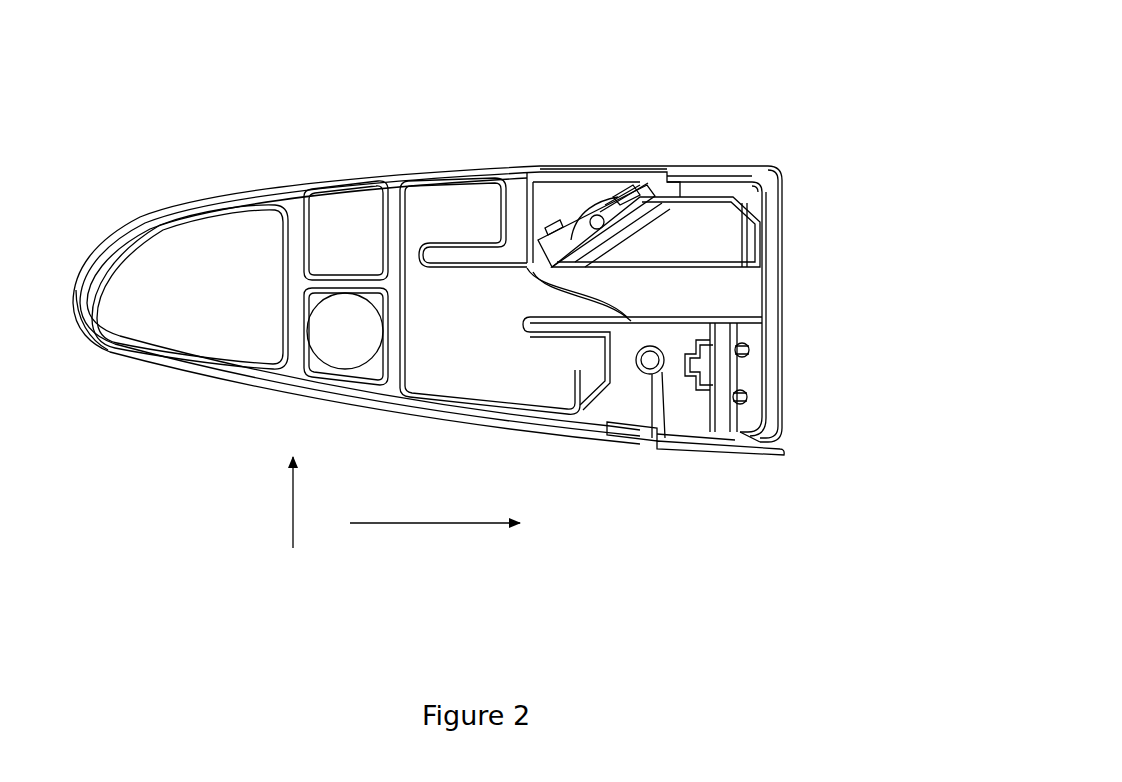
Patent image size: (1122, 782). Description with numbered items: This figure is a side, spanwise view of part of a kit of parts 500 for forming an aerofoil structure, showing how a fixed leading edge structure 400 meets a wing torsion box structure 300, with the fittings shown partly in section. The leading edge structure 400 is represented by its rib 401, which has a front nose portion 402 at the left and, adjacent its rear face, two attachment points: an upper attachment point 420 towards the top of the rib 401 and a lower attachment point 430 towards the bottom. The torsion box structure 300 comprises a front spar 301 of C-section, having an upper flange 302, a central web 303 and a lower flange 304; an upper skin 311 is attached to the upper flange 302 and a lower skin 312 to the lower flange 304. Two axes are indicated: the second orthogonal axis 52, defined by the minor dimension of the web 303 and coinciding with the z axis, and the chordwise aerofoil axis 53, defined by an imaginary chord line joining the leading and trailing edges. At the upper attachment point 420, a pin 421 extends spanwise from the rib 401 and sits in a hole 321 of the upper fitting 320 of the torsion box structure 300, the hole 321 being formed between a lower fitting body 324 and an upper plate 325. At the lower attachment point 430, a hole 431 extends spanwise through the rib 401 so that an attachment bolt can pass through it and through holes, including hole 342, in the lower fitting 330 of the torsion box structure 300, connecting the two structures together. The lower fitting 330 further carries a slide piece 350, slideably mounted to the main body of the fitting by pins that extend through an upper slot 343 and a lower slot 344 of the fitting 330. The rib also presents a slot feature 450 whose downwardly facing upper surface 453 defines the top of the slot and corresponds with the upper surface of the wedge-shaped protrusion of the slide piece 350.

The leading edge structure 400 is at (230, 180).
The rib 401 is at (212, 340).
The front nose portion 402 is at (87, 350).
The upper attachment point 420 is at (560, 147).
The kit of parts 500 is at (762, 108).
The torsion box structure 300 is at (790, 422).
The upper skin 311 is at (720, 170).
The upper flange 302 is at (683, 188).
The front spar 301 is at (857, 148).
The central web 303 is at (836, 151).
The upper fitting 320 is at (690, 245).
The lower fitting body 324 is at (565, 242).
The upper plate 325 is at (592, 212).
The hole 321 is at (612, 192).
The pin 421 is at (645, 124).
The slot feature 450 is at (683, 376).
The hole 431 is at (652, 448).
The downwardly facing upper surface 453 is at (742, 317).
The upper slot 343 is at (738, 350).
The lower fitting 330 is at (750, 367).
The slide piece 350 is at (717, 370).
The lower flange 304 is at (713, 442).
The hole 342 is at (665, 440).
The lower skin 312 is at (752, 452).
The lower slot 344 is at (762, 440).
The lower attachment point 430 is at (622, 457).
The second orthogonal axis 52 is at (292, 517).
The chordwise aerofoil axis 53 is at (410, 523).